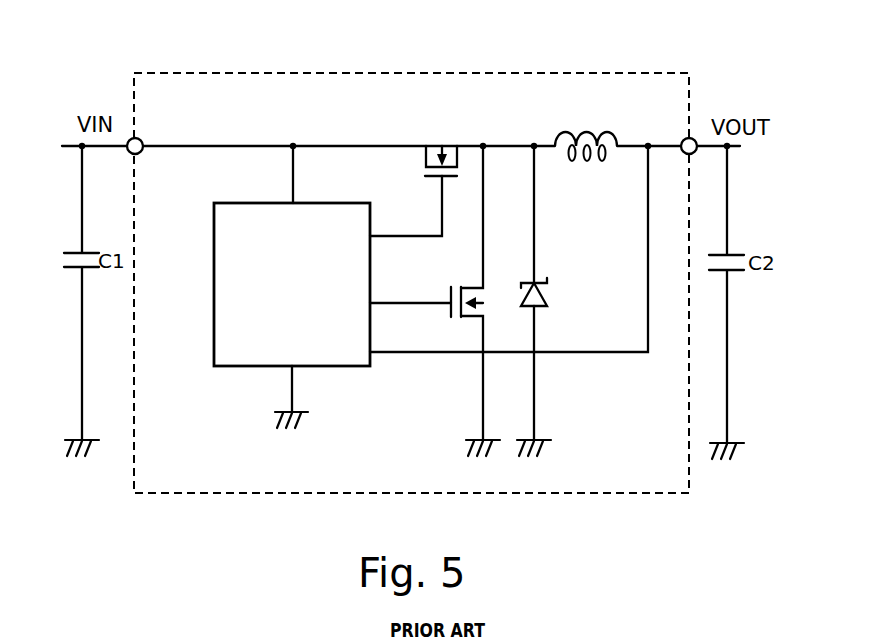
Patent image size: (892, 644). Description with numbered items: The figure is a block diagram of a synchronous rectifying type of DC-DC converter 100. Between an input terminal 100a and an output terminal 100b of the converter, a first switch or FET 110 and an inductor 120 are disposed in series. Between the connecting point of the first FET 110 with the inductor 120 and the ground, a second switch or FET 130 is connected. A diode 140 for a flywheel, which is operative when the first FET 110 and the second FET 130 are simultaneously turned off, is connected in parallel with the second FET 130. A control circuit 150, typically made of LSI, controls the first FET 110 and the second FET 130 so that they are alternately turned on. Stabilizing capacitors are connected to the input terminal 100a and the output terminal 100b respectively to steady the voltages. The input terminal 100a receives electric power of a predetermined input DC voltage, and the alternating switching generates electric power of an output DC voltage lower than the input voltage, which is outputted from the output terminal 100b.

The synchronous rectifying type of DC-DC converter 100 is at (452, 72).
The input terminal 100a is at (130, 139).
The output terminal 100b is at (694, 139).
The first switch (FET) 110 is at (438, 140).
The inductor 120 is at (580, 130).
The second switch (FET) 130 is at (483, 296).
The diode for a flywheel 140 is at (541, 294).
The control circuit 150 is at (343, 203).